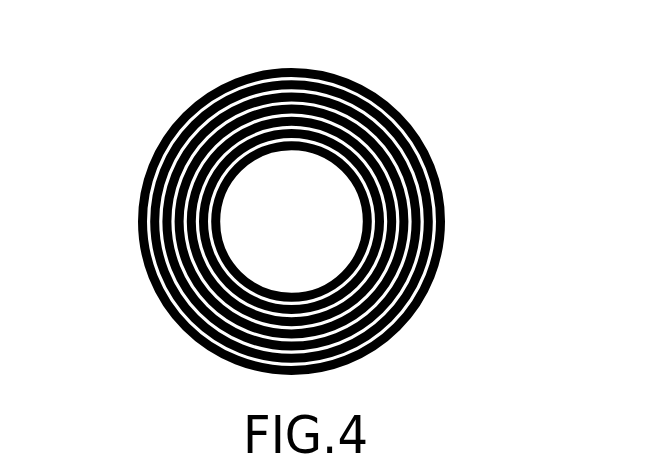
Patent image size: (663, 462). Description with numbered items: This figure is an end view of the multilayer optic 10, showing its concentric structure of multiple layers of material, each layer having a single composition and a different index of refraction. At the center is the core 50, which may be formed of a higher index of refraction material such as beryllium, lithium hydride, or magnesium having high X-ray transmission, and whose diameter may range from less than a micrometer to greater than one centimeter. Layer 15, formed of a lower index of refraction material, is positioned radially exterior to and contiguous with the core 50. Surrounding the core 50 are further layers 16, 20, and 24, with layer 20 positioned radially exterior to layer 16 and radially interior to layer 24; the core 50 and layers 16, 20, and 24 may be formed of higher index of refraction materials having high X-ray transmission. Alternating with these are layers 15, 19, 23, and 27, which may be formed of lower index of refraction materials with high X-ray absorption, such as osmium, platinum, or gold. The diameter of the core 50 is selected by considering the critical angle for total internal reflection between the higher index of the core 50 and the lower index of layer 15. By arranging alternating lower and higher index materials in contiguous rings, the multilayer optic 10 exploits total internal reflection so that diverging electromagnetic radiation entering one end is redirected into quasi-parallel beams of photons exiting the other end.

The multilayer optic 10 is at (406, 40).
The layer 15 is at (355, 180).
The layer 16 is at (363, 228).
The layer 19 is at (345, 267).
The layer 20 is at (348, 288).
The layer 23 is at (215, 292).
The layer 24 is at (180, 254).
The layer 27 is at (168, 206).
The core 50 is at (297, 229).